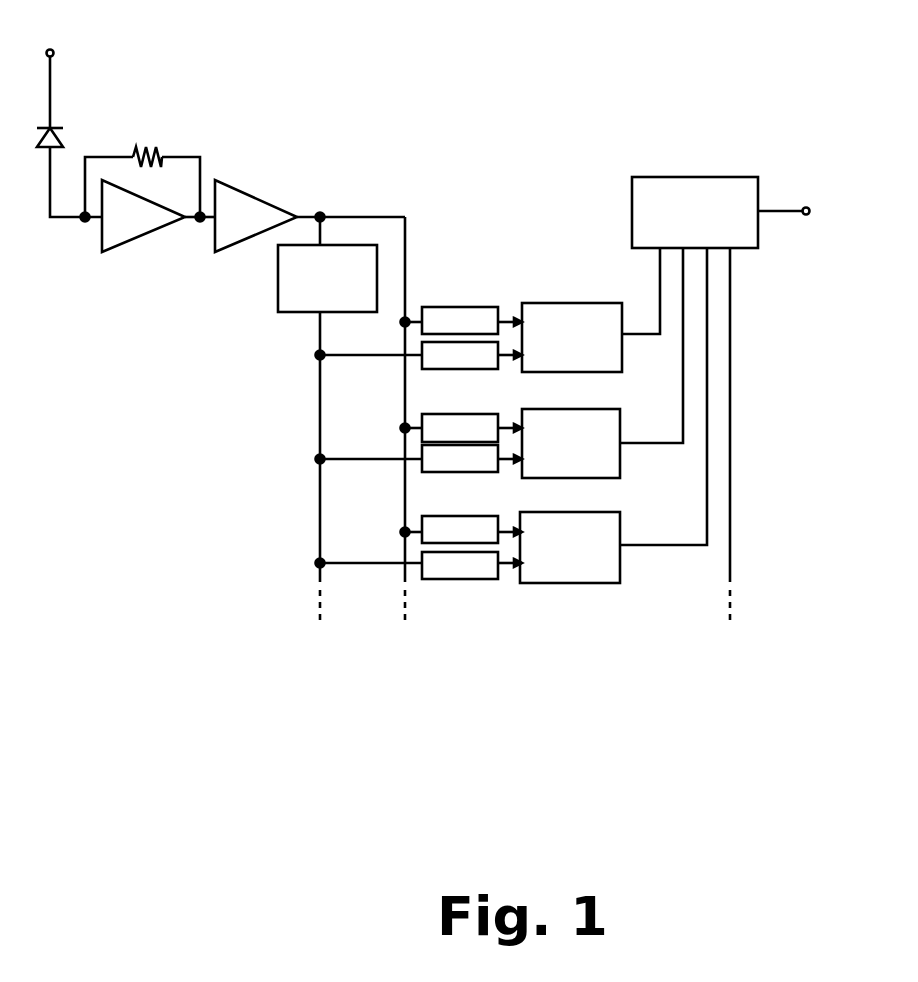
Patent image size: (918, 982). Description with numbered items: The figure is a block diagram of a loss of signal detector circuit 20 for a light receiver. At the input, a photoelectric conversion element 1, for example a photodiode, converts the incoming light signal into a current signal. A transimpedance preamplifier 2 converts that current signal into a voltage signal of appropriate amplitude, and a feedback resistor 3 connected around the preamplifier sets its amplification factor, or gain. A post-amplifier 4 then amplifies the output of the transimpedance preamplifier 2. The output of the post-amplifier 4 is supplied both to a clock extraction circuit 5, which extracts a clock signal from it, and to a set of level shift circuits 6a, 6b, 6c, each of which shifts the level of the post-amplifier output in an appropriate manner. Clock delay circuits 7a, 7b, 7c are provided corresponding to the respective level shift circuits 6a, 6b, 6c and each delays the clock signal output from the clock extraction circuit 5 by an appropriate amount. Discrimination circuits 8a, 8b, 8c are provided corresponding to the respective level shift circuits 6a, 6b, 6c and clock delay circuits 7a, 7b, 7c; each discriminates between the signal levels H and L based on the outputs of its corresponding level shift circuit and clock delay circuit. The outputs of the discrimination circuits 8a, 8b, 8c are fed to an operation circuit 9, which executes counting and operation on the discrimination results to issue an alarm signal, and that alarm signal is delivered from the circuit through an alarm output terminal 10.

The photoelectric conversion element 1 is at (60, 126).
The transimpedance preamplifier 2 is at (102, 252).
The feedback resistor 3 is at (160, 142).
The post-amplifier 4 is at (215, 252).
The clock extraction circuit 5 is at (278, 313).
The level shift circuit 6a is at (442, 307).
The level shift circuit 6b is at (473, 414).
The level shift circuit 6c is at (473, 516).
The clock delay circuit 7a is at (457, 370).
The clock delay circuit 7b is at (458, 472).
The clock delay circuit 7c is at (462, 579).
The discrimination circuit 8a is at (590, 303).
The discrimination circuit 8b is at (620, 428).
The discrimination circuit 8c is at (620, 532).
The operation circuit 9 is at (632, 198).
The alarm output terminal 10 is at (808, 205).
The loss of signal detector circuit 20 is at (447, 92).